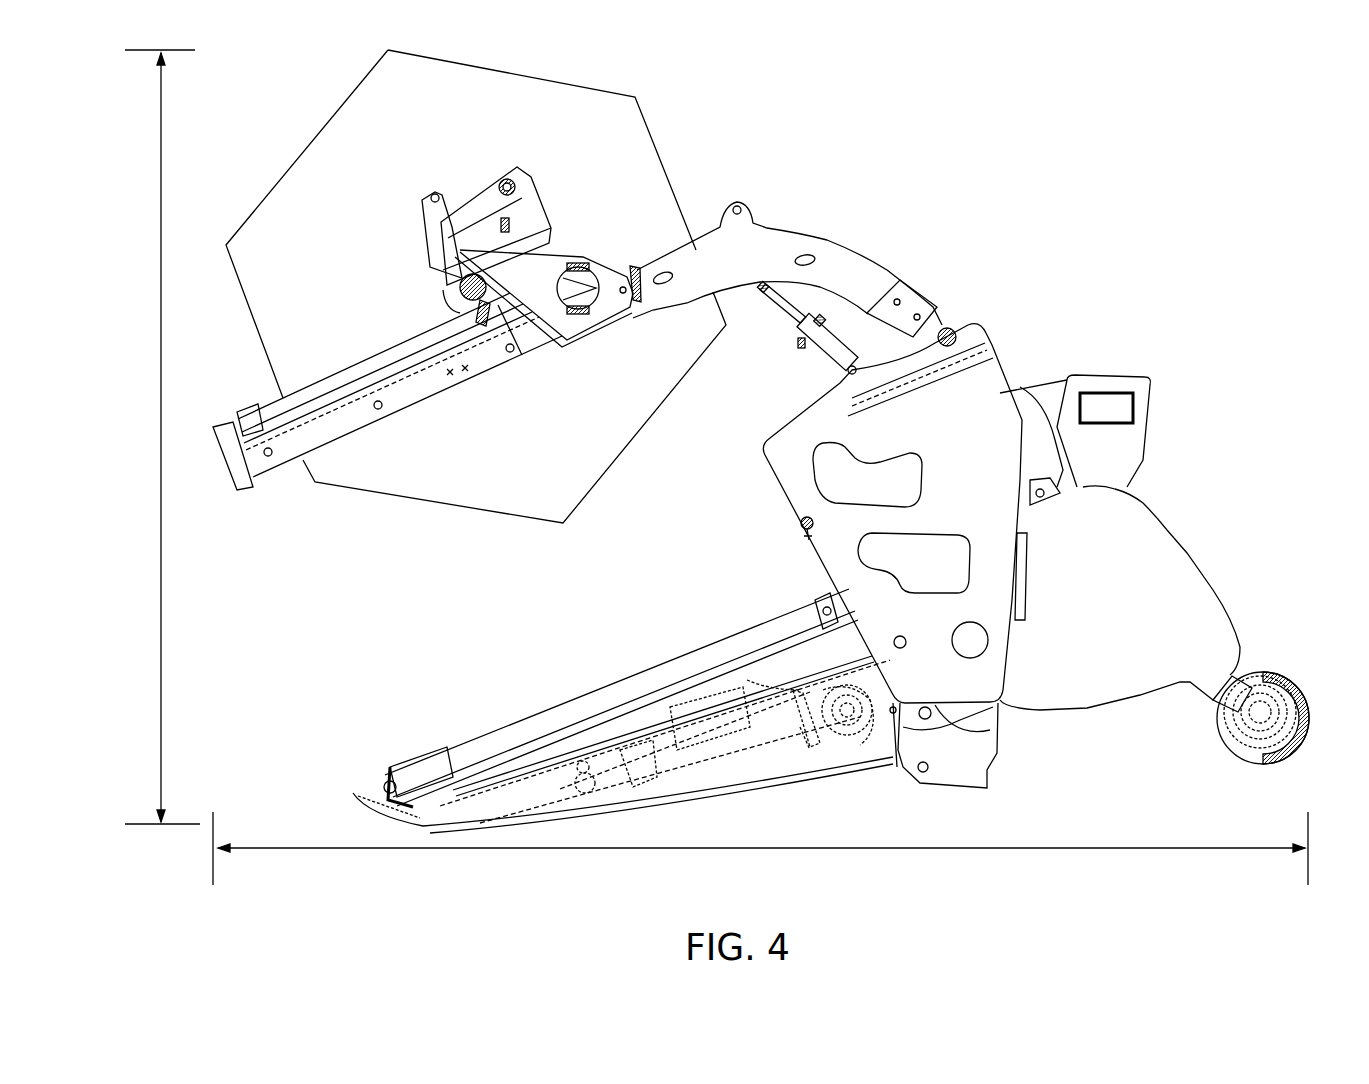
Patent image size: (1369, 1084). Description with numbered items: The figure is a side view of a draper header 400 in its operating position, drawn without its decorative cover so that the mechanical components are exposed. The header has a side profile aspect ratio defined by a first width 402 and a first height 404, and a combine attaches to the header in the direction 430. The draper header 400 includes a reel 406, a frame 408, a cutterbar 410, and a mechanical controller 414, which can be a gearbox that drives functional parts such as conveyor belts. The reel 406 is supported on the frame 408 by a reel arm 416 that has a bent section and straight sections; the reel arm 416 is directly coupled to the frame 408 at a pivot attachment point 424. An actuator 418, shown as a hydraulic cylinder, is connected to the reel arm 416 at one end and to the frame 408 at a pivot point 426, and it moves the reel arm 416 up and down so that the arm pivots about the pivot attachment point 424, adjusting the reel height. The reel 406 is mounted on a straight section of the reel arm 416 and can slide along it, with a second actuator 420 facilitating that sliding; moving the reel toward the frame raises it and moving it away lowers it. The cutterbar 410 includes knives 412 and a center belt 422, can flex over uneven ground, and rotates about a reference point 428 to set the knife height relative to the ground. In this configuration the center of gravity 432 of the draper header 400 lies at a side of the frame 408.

The draper header 400 is at (1081, 166).
The first width 402 is at (775, 856).
The first height 404 is at (160, 438).
The reel 406 is at (282, 183).
The frame 408 is at (770, 446).
The cutterbar 410 is at (534, 690).
The knives 412 is at (357, 793).
The mechanical controller 414 is at (1182, 565).
The reel arm 416 is at (833, 250).
The actuator 418 is at (817, 357).
The actuator 420 is at (263, 410).
The center belt 422 is at (831, 769).
The pivot attachment point 424 is at (945, 330).
The pivot point 426 is at (873, 310).
The reference point 428 is at (900, 636).
The direction 430 is at (1300, 625).
The center of gravity 432 is at (791, 519).